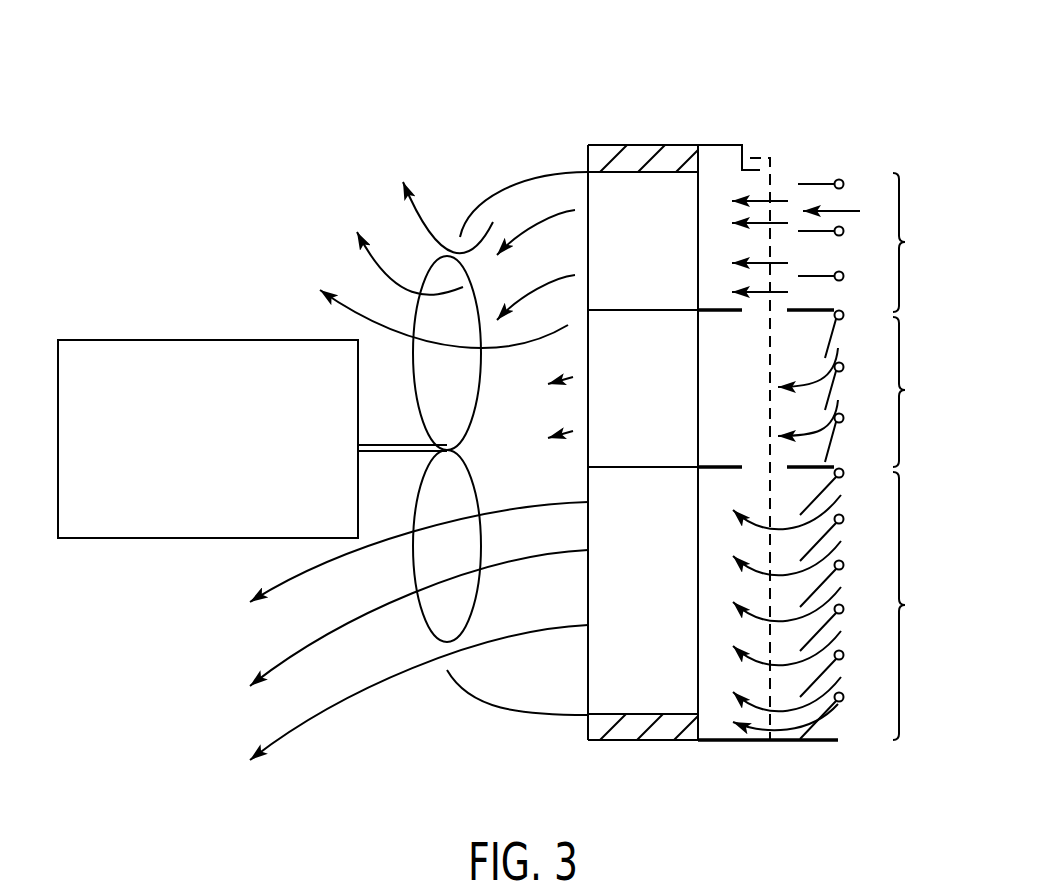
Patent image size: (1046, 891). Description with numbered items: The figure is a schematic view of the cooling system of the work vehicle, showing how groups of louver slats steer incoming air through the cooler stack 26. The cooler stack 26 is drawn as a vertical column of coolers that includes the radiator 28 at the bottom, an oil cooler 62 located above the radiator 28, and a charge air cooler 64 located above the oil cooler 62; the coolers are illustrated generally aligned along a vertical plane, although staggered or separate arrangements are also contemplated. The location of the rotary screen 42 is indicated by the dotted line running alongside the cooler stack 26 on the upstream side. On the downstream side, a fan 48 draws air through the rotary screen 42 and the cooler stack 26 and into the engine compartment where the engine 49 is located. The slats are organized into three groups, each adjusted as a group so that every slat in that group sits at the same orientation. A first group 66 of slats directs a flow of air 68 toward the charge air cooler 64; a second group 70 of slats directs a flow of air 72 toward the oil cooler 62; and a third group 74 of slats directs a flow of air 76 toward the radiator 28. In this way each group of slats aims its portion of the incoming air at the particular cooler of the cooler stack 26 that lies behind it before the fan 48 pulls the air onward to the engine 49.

The cooler stack 26 is at (621, 113).
The radiator 28 is at (663, 693).
The rotary screen 42 is at (782, 147).
The fan 48 is at (450, 488).
The engine 49 is at (117, 358).
The oil cooler 62 is at (677, 437).
The charge air cooler 64 is at (658, 195).
The first group of slats 66 is at (868, 242).
The flow of air through the first group 68 is at (891, 239).
The second group of slats 70 is at (882, 389).
The flow of air through the second group 72 is at (848, 397).
The third group of slats 74 is at (869, 605).
The flow of air through the third group 76 is at (848, 627).